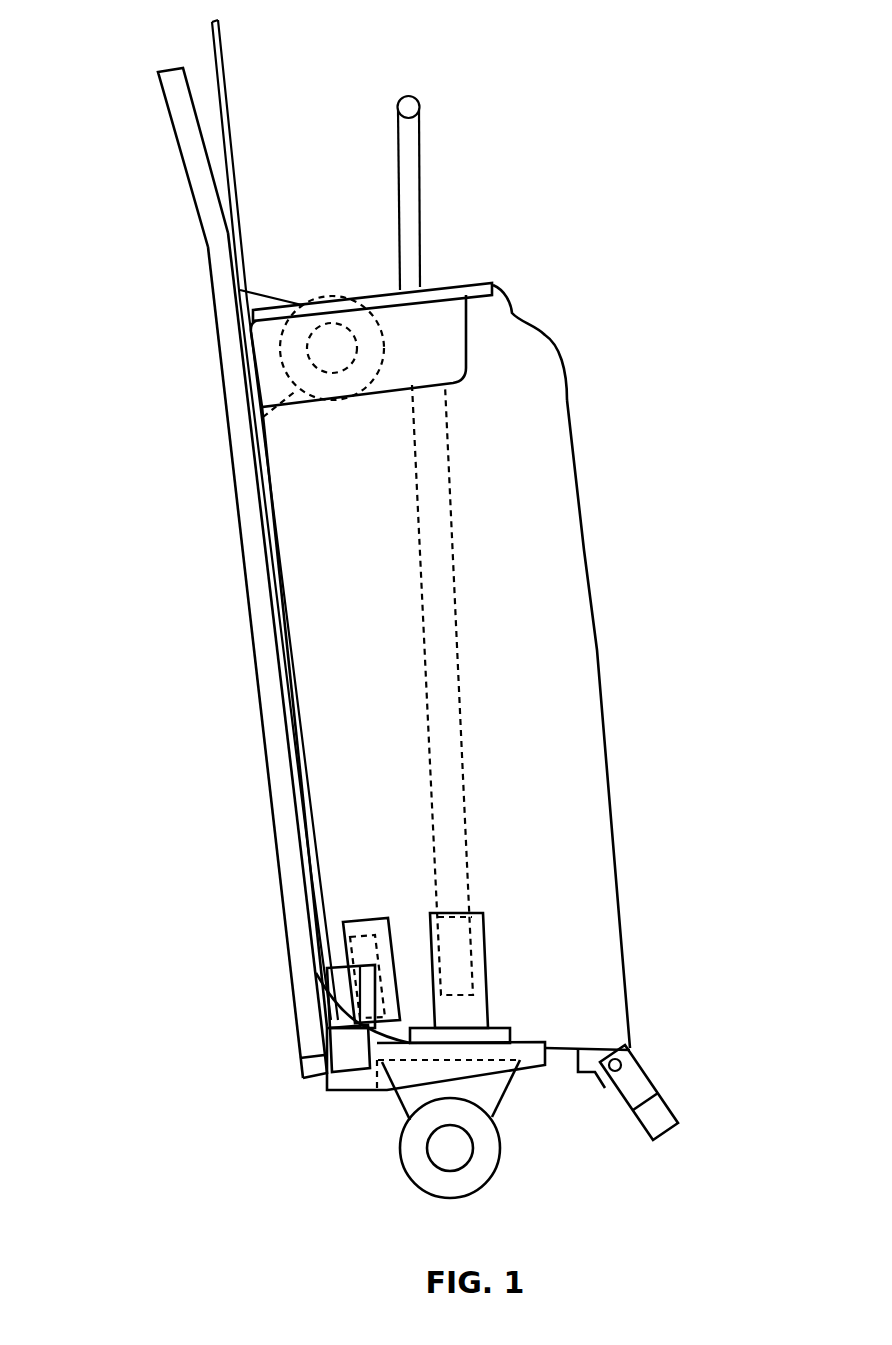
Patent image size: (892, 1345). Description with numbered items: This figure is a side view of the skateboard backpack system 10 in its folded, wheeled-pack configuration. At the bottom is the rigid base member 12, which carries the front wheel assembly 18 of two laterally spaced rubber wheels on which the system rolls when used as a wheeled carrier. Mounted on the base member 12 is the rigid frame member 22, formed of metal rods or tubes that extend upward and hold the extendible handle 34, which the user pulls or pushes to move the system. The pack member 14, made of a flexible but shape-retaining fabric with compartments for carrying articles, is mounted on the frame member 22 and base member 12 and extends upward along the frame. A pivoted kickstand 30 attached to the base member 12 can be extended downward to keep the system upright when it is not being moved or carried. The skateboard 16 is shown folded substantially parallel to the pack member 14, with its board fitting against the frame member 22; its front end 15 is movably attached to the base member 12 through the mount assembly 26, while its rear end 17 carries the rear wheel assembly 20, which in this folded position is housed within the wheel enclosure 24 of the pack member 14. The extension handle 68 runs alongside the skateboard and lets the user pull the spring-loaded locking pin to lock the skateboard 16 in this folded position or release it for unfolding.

The skateboard backpack system 10 is at (562, 94).
The base member 12 is at (362, 1093).
The pack member 14 is at (543, 332).
The front end 15 is at (297, 1075).
The skateboard 16 is at (212, 678).
The rear end 17 is at (155, 73).
The front wheel assembly 18 is at (500, 1157).
The rear wheel assembly 20 is at (323, 287).
The frame member 22 is at (490, 632).
The wheel enclosure 24 is at (430, 322).
The mount assembly 26 is at (335, 975).
The kickstand 30 is at (663, 1105).
The handle 34 is at (418, 98).
The extension handle 68 is at (227, 63).